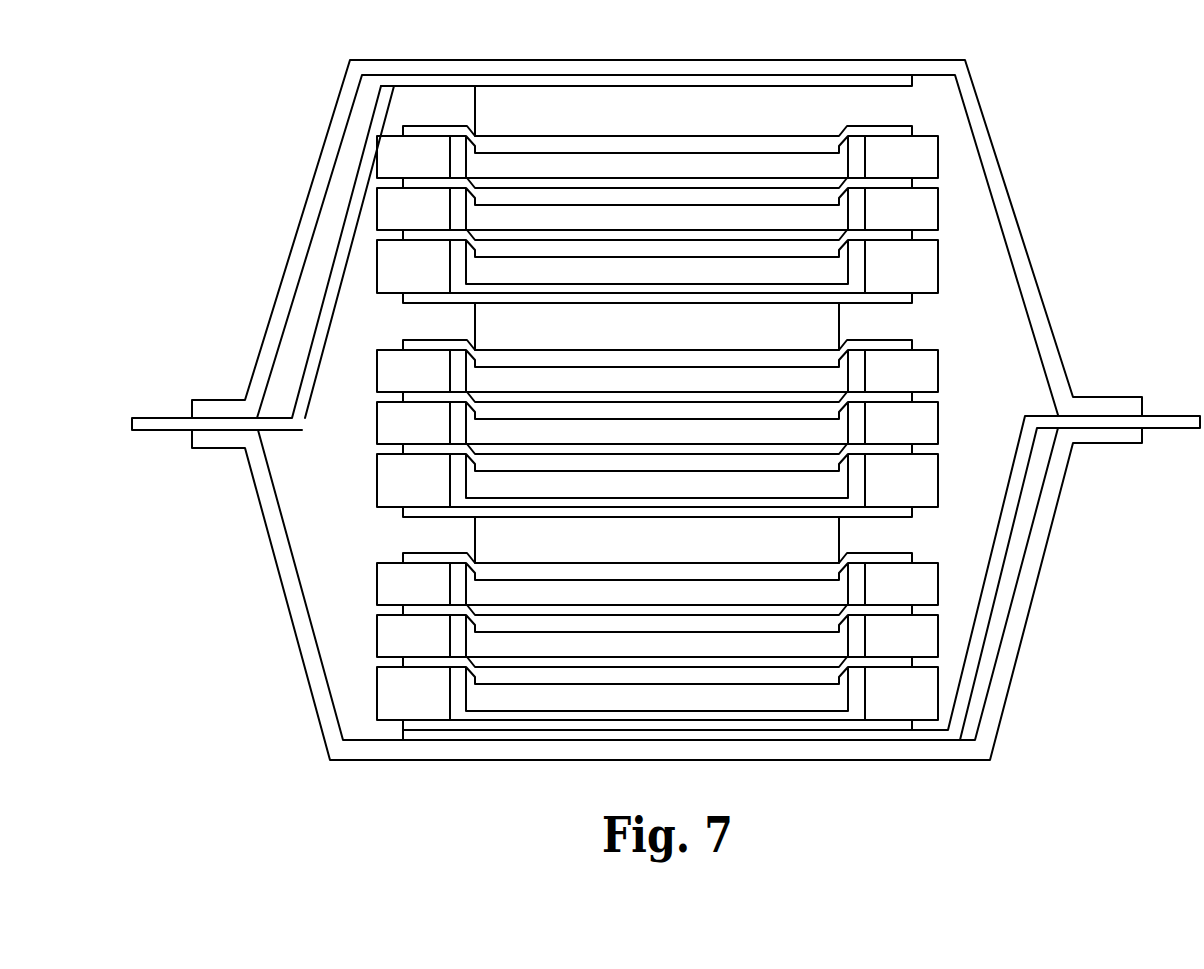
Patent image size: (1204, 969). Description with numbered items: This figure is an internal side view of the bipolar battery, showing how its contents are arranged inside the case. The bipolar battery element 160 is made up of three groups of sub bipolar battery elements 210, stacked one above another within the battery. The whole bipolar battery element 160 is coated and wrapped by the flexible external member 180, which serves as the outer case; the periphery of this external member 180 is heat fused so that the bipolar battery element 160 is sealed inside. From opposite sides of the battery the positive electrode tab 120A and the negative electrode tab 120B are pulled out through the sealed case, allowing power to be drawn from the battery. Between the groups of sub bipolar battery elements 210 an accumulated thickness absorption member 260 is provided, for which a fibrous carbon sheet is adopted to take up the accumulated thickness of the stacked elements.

The bipolar battery element 160 is at (392, 120).
The external member 180 is at (1022, 225).
The positive electrode tab 120A is at (163, 418).
The negative electrode tab 120B is at (1173, 415).
The sub bipolar battery element 210 is at (372, 733).
The accumulated thickness absorption member 260 is at (835, 325).